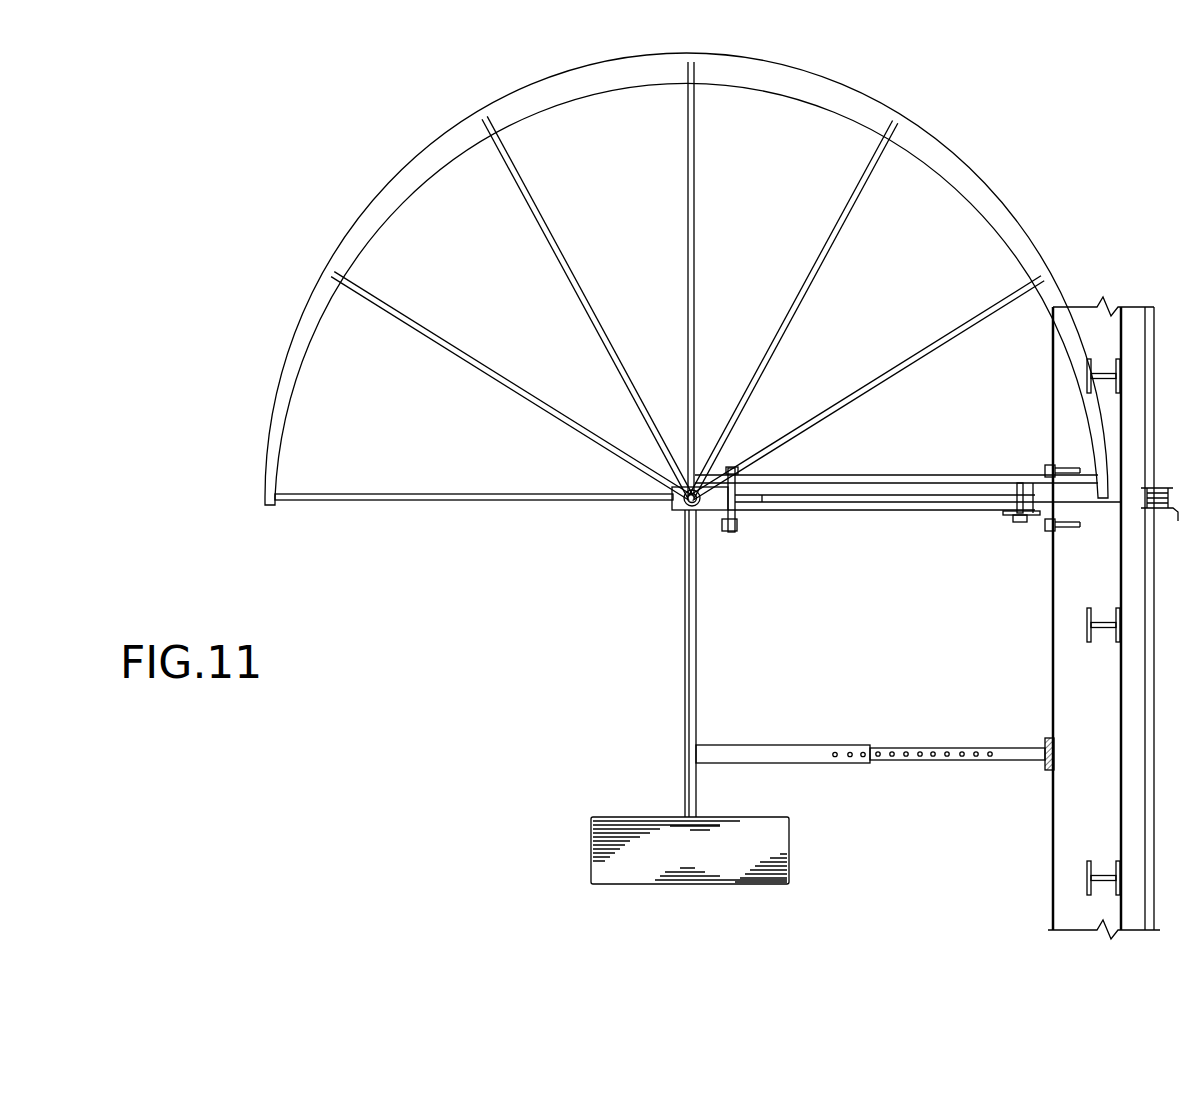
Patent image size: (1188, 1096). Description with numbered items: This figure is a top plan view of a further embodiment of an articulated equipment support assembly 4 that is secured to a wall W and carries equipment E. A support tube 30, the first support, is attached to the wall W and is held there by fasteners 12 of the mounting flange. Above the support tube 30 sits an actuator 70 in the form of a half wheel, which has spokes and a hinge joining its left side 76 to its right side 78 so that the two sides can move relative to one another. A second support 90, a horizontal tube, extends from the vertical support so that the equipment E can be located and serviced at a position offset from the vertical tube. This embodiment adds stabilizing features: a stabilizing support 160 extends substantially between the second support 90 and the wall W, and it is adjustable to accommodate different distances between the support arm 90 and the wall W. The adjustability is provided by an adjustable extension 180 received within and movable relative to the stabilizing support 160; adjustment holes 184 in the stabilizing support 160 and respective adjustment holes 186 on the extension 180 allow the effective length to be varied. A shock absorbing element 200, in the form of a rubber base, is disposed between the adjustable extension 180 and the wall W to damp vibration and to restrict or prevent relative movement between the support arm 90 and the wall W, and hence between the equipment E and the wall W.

The articulated equipment support assembly 4 is at (390, 716).
The fasteners 12 is at (1070, 466).
The support tube 30 is at (841, 513).
The actuator 70 is at (562, 504).
The left side 76 is at (1022, 224).
The right side 78 is at (400, 501).
The second support 90 is at (696, 649).
The stabilizing support 160 is at (796, 767).
The adjustable extension 180 is at (957, 767).
The adjustment holes 184 is at (863, 750).
The adjustment holes 186 is at (947, 752).
The shock absorbing element 200 is at (1045, 745).
The wall W is at (1055, 585).
The equipment E is at (605, 838).